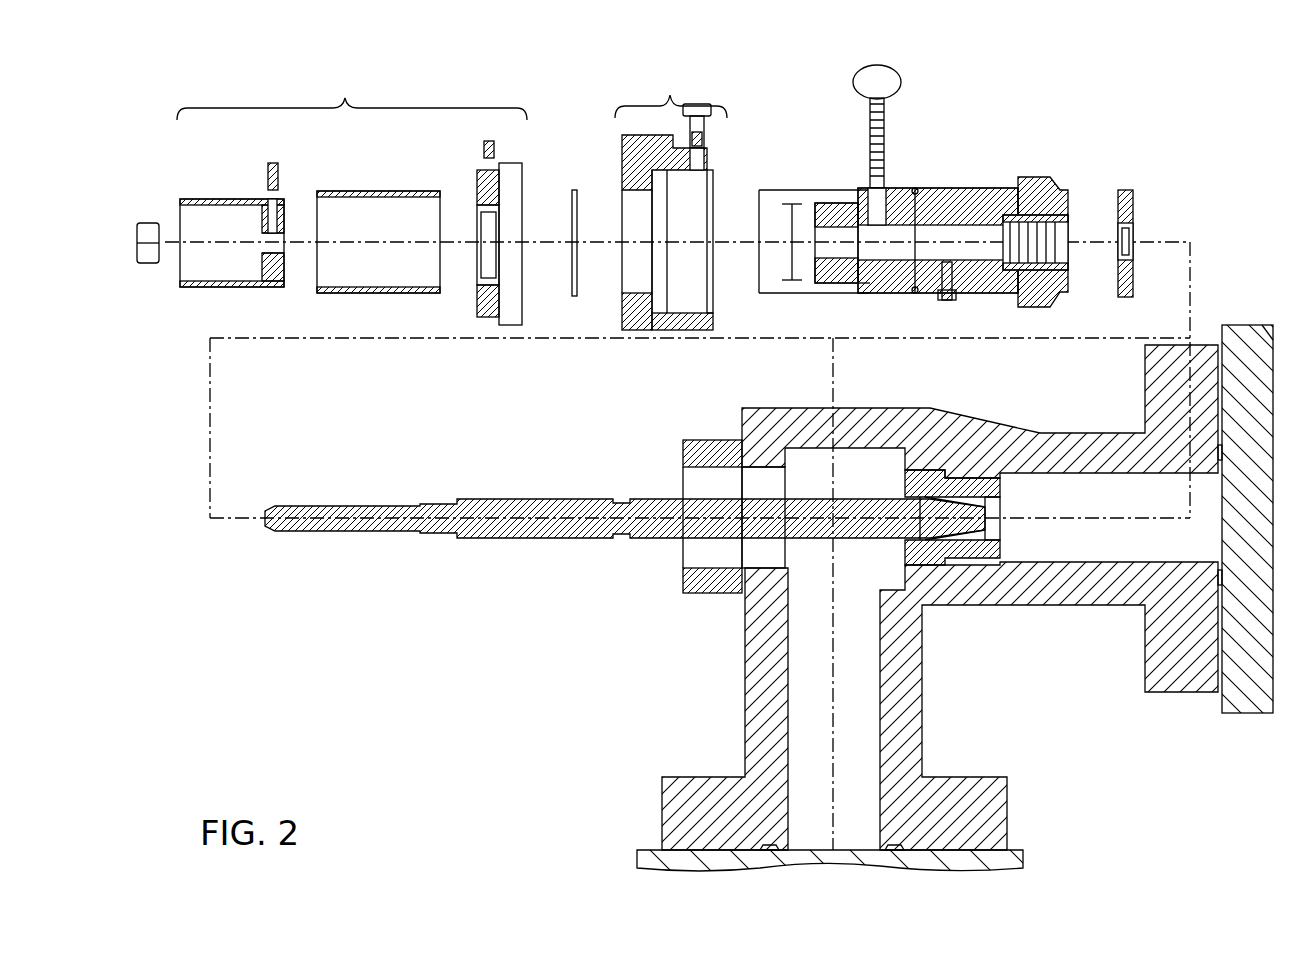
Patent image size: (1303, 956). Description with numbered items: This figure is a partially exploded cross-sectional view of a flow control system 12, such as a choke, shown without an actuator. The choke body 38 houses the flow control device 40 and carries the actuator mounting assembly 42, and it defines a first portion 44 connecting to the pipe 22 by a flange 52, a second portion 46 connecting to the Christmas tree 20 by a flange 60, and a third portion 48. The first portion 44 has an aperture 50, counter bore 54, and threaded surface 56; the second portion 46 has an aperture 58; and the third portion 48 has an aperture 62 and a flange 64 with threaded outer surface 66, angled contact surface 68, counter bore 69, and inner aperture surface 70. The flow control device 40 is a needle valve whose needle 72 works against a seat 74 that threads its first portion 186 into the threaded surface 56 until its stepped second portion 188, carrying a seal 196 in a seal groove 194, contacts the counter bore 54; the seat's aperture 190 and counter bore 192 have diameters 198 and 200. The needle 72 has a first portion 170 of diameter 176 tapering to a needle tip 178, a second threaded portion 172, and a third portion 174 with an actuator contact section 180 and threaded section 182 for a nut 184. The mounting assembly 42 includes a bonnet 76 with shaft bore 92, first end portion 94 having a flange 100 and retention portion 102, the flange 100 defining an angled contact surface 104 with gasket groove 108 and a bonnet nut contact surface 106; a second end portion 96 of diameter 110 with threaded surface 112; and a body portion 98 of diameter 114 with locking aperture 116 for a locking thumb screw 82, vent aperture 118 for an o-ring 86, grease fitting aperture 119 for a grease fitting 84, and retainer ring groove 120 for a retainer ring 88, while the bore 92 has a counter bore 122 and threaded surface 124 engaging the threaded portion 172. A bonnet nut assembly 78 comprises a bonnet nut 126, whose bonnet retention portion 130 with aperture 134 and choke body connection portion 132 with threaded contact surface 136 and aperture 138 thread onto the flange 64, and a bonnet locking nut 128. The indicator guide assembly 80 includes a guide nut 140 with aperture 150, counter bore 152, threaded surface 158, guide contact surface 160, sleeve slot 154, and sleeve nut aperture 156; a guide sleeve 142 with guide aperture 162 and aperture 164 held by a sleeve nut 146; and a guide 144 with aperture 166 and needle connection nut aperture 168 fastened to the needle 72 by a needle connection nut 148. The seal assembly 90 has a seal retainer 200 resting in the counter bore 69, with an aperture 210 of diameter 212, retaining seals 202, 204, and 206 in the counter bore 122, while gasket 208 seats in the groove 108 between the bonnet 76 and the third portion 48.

The flow control system 12 is at (355, 720).
The Christmas tree 20 is at (640, 858).
The pipe 22 is at (1245, 715).
The choke body 38 is at (1125, 780).
The flow control device 40 is at (828, 572).
The actuator mounting assembly 42 is at (445, 432).
The first portion 44 is at (1105, 635).
The second portion 46 is at (940, 750).
The third portion 48 is at (695, 670).
The aperture 50 is at (1187, 515).
The flange 52 is at (1180, 693).
The counter bore 54 is at (930, 575).
The threaded surface 56 is at (975, 570).
The aperture 58 is at (832, 831).
The flange 60 is at (665, 805).
The aperture 62 is at (762, 517).
The flange 64 is at (680, 622).
The threaded outer surface 66 is at (702, 595).
The angled contact surface 68 is at (677, 575).
The counter bore 69 is at (728, 470).
The inner aperture surface 70 is at (680, 560).
The needle 72 is at (520, 555).
The seat 74 is at (1020, 490).
The bonnet 76 is at (1000, 132).
The bonnet nut assembly 78 is at (671, 94).
The indicator guide assembly 80 is at (352, 98).
The locking thumb screw 82 is at (855, 85).
The grease fitting 84 is at (948, 302).
The o-ring 86 is at (915, 188).
The retainer ring 88 is at (574, 192).
The seal assembly 90 is at (1062, 300).
The shaft bore 92 is at (920, 241).
The first end portion 94 is at (1088, 282).
The second end portion 96 is at (832, 302).
The body portion 98 is at (942, 158).
The flange 100 is at (1035, 175).
The retention portion 102 is at (1072, 185).
The angled choke body contact surface 104 is at (1055, 305).
The bonnet nut contact surface 106 is at (1030, 300).
The gasket groove 108 is at (1047, 188).
The diameter 110 is at (792, 252).
The threaded surface 112 is at (830, 205).
The diameter 114 is at (758, 242).
The locking aperture 116 is at (870, 195).
The vent aperture 118 is at (943, 292).
The grease fitting aperture 119 is at (940, 302).
The retainer ring groove 120 is at (975, 290).
The counter bore 122 is at (1013, 215).
The threaded surface 124 is at (882, 275).
The bonnet nut 126 is at (615, 352).
The bonnet locking nut 128 is at (690, 118).
The bonnet retention portion 130 is at (628, 312).
The choke body connection portion 132 is at (670, 327).
The aperture 134 is at (632, 225).
The threaded contact surface 136 is at (688, 318).
The aperture 138 is at (702, 150).
The guide nut 140 is at (512, 322).
The guide sleeve 142 is at (372, 294).
The guide 144 is at (225, 288).
The sleeve nut 146 is at (500, 149).
The needle connection nut 148 is at (270, 165).
The aperture 150 is at (510, 258).
The counter bore 152 is at (478, 235).
The sleeve slot 154 is at (478, 295).
The sleeve nut aperture 156 is at (488, 173).
The threaded surface 158 is at (500, 215).
The guide contact surface 160 is at (480, 275).
The guide aperture 162 is at (357, 217).
The aperture 164 is at (400, 192).
The aperture 166 is at (272, 243).
The needle connection nut aperture 168 is at (270, 205).
The first portion 170 is at (855, 552).
The second threaded portion 172 is at (515, 500).
The third portion 174 is at (307, 555).
The diameter 176 is at (900, 530).
The needle tip 178 is at (985, 505).
The actuator contact section 180 is at (316, 505).
The threaded section 182 is at (272, 530).
The nut 184 is at (145, 222).
The threaded first portion 186 is at (990, 548).
The stepped second portion 188 is at (905, 470).
The aperture 190 is at (1000, 508).
The counter bore 192 is at (960, 478).
The seal groove 194 is at (940, 585).
The seal 196 is at (948, 460).
The diameter 198 is at (1003, 525).
The seal retainer 200 is at (1135, 205).
The seal 202 is at (1123, 195).
The seal 204 is at (1060, 225).
The seal 206 is at (1008, 258).
The gasket 208 is at (1050, 292).
The aperture 210 is at (1130, 232).
The diameter 212 is at (1130, 250).